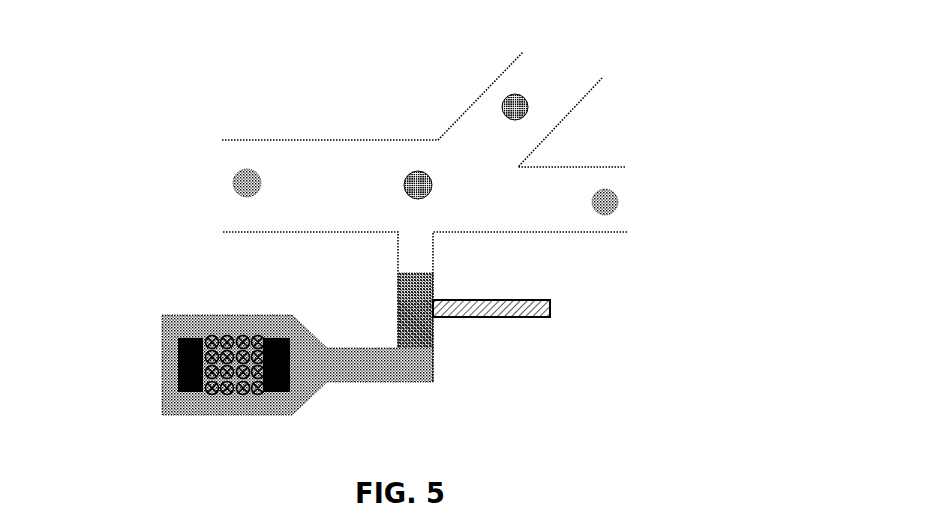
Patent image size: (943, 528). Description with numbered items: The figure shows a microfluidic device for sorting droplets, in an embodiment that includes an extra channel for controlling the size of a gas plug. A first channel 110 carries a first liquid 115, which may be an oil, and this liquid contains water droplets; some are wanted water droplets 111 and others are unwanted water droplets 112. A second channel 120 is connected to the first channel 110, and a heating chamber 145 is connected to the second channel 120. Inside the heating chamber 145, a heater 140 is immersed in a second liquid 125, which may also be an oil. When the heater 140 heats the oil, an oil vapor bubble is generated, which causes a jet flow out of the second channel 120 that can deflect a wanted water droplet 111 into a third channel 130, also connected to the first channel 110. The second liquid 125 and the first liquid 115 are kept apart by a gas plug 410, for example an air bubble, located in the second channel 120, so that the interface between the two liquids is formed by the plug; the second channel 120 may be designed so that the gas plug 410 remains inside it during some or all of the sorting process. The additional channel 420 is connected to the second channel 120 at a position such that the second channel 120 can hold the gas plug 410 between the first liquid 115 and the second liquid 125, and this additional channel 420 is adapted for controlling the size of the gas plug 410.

The first channel 110 is at (303, 233).
The wanted water droplets 111 is at (410, 173).
The unwanted water droplets 112 is at (232, 180).
The first liquid 115 is at (275, 155).
The second channel 120 is at (398, 253).
The second liquid 125 is at (185, 332).
The third channel 130 is at (508, 62).
The heater 140 is at (180, 377).
The heating chamber 145 is at (227, 315).
The gas plug 410 is at (420, 338).
The additional channel 420 is at (512, 317).